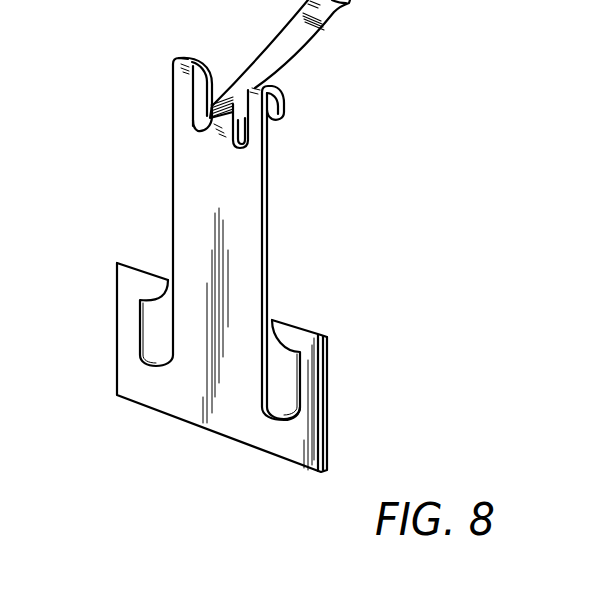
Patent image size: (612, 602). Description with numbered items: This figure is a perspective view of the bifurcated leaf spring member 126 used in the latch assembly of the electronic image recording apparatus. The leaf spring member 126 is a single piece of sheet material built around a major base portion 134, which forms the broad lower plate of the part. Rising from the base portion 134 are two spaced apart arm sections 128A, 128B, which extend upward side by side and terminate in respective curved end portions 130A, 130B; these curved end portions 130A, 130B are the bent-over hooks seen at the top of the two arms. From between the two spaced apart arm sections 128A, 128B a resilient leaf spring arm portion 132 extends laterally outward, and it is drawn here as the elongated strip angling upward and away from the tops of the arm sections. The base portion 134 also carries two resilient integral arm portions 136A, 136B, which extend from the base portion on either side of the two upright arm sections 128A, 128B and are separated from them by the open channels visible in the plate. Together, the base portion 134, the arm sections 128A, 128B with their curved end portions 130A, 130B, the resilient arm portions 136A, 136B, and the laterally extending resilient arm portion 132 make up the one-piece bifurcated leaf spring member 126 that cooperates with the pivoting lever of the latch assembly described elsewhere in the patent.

The bifurcated leaf spring member 126 is at (326, 229).
The arm section 128A is at (173, 85).
The arm section 128B is at (243, 133).
The curved end portion 130A is at (212, 90).
The curved end portion 130B is at (285, 100).
The resilient leaf spring arm portion 132 is at (310, 40).
The major base portion 134 is at (258, 426).
The resilient integral arm portion 136A is at (115, 312).
The resilient integral arm portion 136B is at (328, 370).